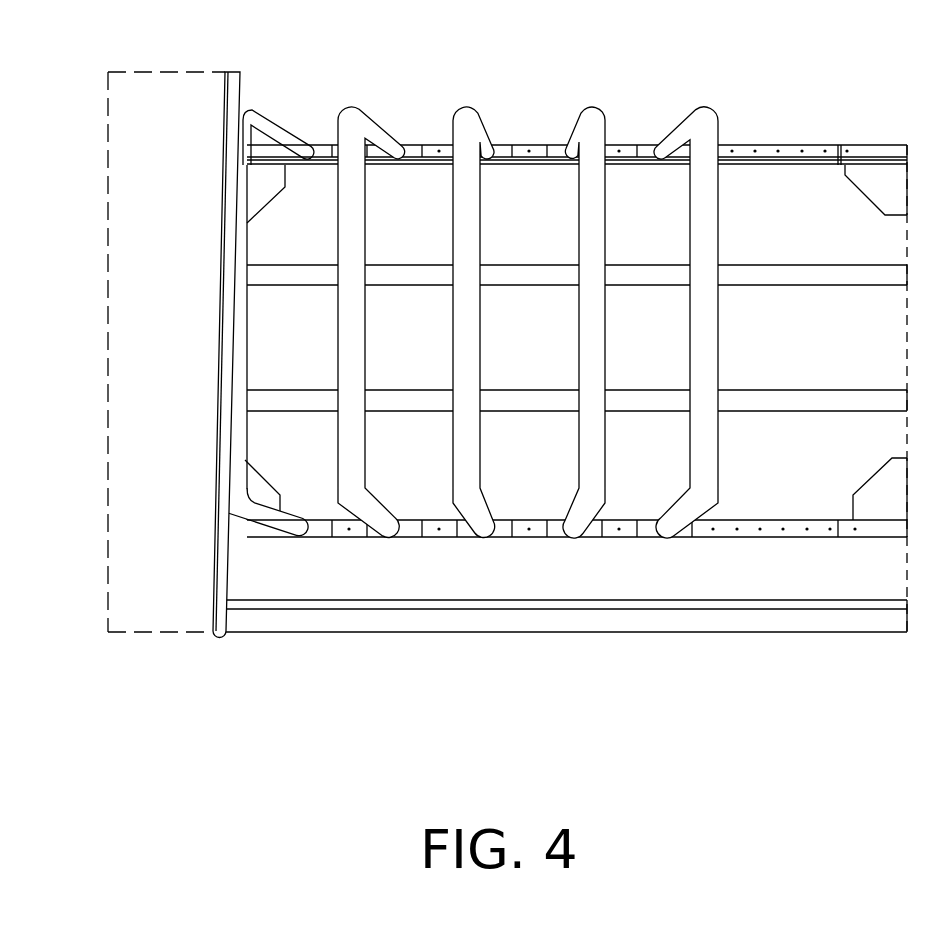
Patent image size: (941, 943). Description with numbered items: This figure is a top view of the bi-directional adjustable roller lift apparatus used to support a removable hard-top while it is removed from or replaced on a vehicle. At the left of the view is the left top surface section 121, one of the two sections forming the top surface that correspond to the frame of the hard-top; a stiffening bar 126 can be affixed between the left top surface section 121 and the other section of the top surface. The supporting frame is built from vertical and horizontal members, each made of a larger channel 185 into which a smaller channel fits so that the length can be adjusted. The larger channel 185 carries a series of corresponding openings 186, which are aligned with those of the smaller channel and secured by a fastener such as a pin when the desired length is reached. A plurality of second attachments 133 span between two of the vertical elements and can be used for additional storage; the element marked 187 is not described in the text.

The left top surface section 121 is at (170, 117).
The stiffening bar 126 is at (498, 620).
The second attachments 133 is at (356, 122).
The larger channel 185 is at (882, 152).
The openings 186 is at (742, 152).
The apertures 187 is at (776, 162).